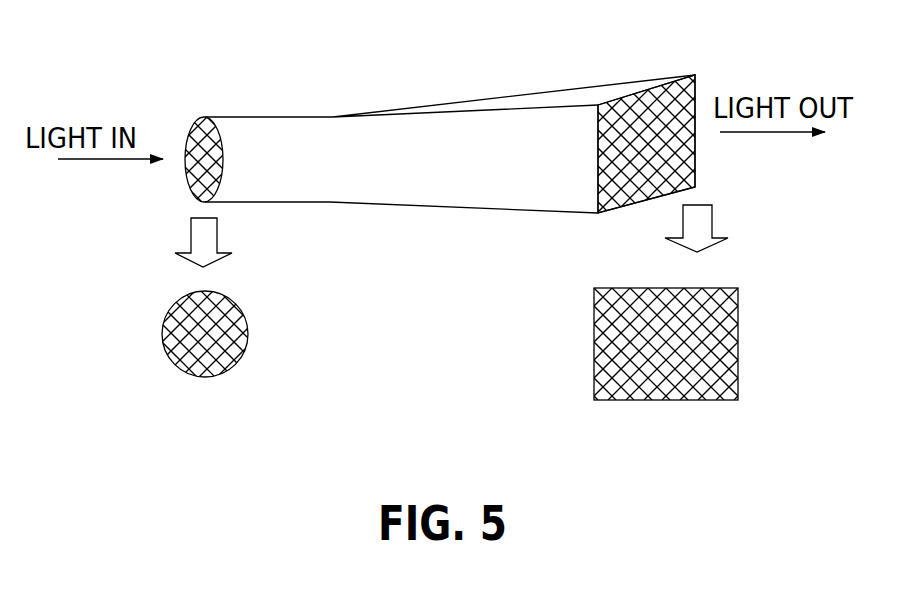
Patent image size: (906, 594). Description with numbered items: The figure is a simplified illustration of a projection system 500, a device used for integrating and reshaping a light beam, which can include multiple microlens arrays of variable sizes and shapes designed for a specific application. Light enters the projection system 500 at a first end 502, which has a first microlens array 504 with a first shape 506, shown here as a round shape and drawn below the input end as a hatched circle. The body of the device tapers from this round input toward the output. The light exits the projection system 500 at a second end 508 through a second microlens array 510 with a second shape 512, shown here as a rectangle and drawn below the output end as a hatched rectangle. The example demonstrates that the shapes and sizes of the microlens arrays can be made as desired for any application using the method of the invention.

The projection system 500 is at (715, 85).
The first end 502 is at (188, 120).
The first microlens array 504 is at (230, 348).
The first shape 506 is at (150, 322).
The second end 508 is at (705, 160).
The second microlens array 510 is at (623, 360).
The second shape 512 is at (575, 340).